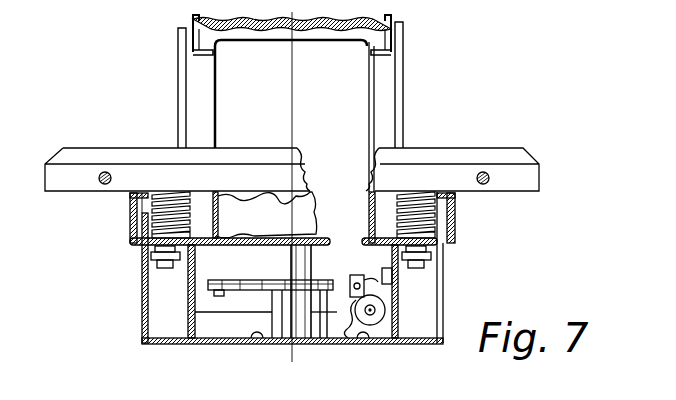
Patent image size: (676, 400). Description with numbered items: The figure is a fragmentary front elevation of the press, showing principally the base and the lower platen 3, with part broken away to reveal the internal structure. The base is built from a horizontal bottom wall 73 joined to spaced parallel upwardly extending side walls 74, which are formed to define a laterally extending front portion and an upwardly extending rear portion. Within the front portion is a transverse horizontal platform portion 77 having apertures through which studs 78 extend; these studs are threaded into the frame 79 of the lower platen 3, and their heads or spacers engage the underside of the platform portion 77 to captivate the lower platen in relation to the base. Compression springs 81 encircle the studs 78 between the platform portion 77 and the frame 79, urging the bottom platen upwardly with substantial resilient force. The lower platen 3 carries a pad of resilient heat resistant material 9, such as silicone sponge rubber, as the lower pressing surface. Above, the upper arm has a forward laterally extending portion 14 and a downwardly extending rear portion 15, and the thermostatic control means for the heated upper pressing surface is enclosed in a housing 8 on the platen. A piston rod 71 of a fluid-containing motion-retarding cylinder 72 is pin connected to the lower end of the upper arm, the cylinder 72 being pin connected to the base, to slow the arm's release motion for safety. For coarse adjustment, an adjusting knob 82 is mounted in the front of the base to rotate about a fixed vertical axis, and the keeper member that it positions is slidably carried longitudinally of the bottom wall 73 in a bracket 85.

The lower platen 3 is at (541, 177).
The housing 8 is at (322, 8).
The pad of resilient heat resistant material 9 is at (63, 148).
The forward laterally extending portion 14 is at (212, 52).
The downwardly extending rear portion 15 is at (217, 136).
The piston rod 71 is at (370, 278).
The motion-retarding cylinder 72 is at (355, 338).
The bottom wall 73 is at (252, 344).
The side walls 74 is at (178, 124).
The platform portion 77 is at (268, 239).
The studs 78 is at (172, 268).
The frame 79 is at (464, 200).
The compression springs 81 is at (132, 206).
The adjusting knob 82 is at (262, 280).
The bracket 85 is at (271, 316).